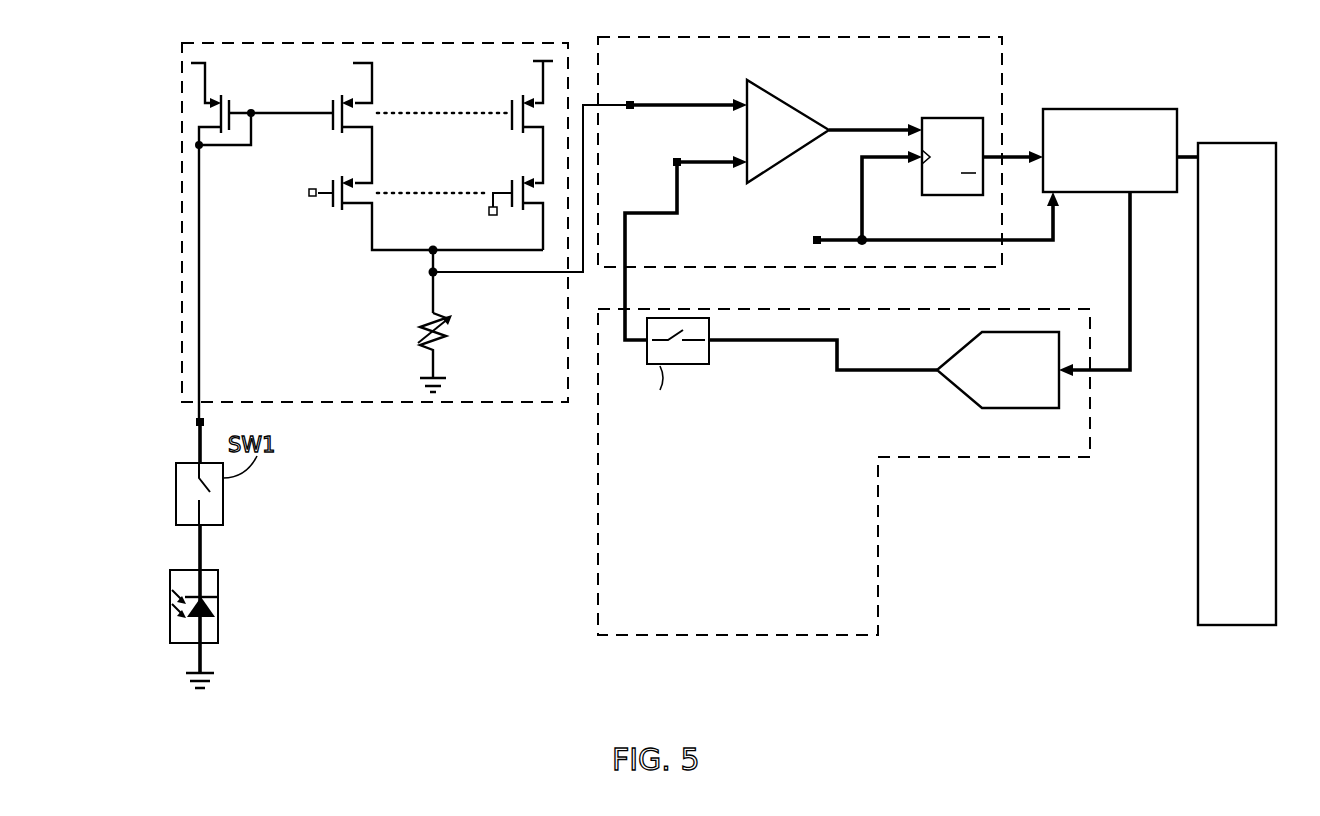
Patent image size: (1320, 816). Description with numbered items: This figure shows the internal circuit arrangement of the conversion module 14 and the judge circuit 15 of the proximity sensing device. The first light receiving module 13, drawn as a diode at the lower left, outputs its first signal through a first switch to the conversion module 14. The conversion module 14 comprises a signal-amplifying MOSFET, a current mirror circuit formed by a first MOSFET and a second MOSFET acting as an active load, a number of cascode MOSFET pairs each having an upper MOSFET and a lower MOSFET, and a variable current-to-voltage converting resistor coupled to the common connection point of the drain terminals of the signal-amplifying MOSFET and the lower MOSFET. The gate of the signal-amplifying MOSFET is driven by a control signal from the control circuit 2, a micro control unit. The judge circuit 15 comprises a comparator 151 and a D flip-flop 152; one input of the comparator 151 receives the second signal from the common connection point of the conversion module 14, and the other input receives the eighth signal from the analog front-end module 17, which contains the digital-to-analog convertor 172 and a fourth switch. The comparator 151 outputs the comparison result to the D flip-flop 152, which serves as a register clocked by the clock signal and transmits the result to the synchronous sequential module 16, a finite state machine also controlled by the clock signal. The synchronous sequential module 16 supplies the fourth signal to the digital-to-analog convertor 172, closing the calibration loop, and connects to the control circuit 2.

The control circuit 2 is at (1243, 631).
The first light receiving module 13 is at (218, 631).
The conversion module 14 is at (178, 380).
The judge circuit 15 is at (829, 140).
The comparator 151 is at (785, 118).
The D flip-flop 152 is at (950, 118).
The synchronous sequential module 16 is at (1163, 116).
The analog front-end module 17 is at (817, 421).
The digital-to-analog convertor 172 is at (945, 380).